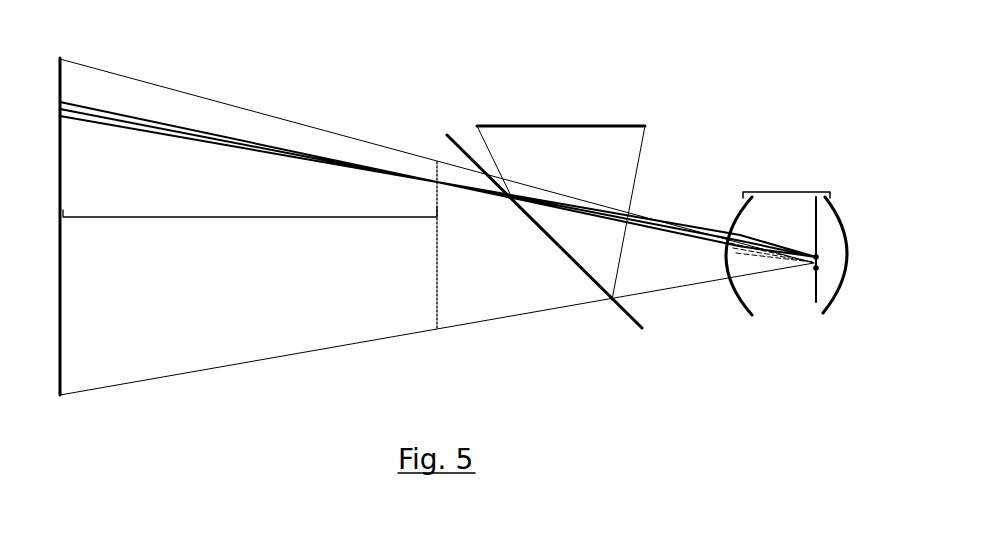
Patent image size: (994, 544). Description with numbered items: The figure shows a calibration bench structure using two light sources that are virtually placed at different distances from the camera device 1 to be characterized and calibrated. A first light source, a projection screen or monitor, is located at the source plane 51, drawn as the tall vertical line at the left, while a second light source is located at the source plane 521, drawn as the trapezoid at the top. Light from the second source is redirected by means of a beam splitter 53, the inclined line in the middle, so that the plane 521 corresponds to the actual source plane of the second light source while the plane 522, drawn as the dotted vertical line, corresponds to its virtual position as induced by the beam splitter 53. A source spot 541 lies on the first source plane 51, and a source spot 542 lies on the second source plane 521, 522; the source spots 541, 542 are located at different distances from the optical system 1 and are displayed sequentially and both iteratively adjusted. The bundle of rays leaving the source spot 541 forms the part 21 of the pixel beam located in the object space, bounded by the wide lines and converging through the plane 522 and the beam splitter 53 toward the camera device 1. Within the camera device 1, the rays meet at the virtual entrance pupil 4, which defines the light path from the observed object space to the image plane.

The source plane 51 is at (58, 355).
The part of pixel beam located in the object space 21 is at (247, 250).
The source spot 541 is at (74, 95).
The source spot 542 is at (428, 173).
The source plane 521 is at (593, 125).
The virtual source plane 522 is at (438, 375).
The beam splitter 53 is at (635, 372).
The camera device 1 is at (788, 188).
The virtual entrance pupil 4 is at (806, 273).